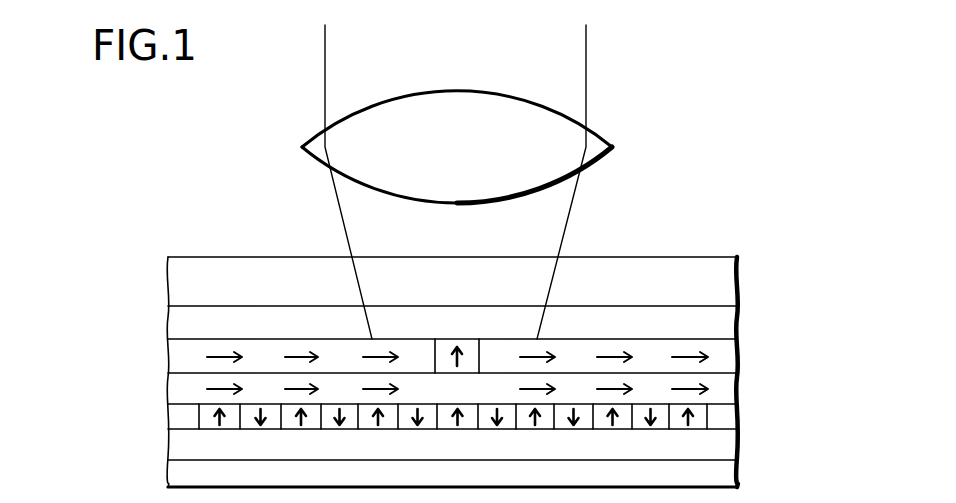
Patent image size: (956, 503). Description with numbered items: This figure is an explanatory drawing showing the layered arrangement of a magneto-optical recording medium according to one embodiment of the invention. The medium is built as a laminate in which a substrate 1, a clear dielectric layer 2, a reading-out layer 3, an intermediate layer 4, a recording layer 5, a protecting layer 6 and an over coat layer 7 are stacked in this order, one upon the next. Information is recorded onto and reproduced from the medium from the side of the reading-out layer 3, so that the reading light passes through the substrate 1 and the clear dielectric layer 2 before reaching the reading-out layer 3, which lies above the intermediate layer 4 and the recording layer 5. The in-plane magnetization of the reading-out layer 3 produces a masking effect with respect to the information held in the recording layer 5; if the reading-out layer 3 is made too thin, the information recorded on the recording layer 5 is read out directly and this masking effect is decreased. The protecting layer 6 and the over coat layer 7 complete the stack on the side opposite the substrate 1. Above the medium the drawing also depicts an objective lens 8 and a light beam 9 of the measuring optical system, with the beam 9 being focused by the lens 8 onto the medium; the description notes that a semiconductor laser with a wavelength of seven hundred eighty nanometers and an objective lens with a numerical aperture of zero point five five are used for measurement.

The substrate 1 is at (728, 289).
The clear dielectric layer 2 is at (728, 327).
The reading-out layer 3 is at (728, 362).
The intermediate layer 4 is at (728, 394).
The recording layer 5 is at (728, 426).
The protecting layer 6 is at (728, 456).
The over coat layer 7 is at (728, 486).
The objective lens 8 is at (606, 136).
The light beam 9 is at (586, 63).